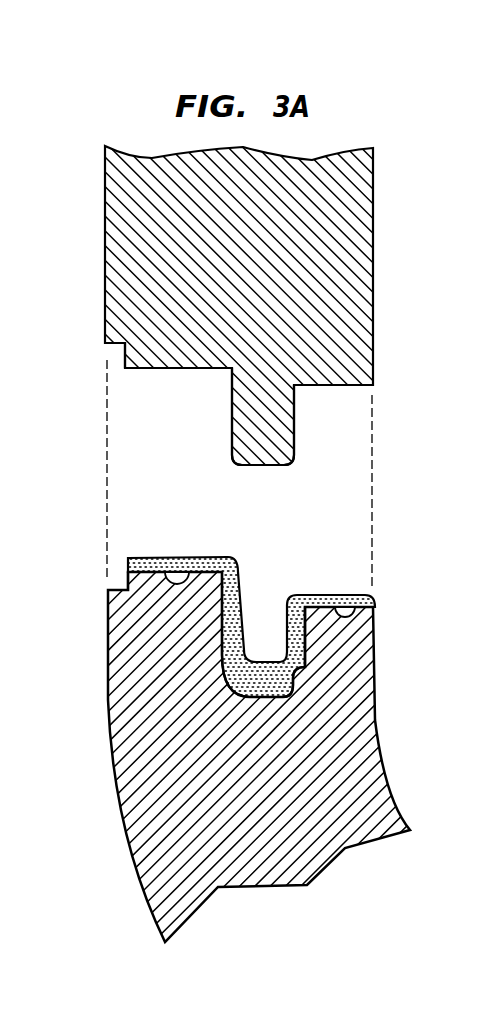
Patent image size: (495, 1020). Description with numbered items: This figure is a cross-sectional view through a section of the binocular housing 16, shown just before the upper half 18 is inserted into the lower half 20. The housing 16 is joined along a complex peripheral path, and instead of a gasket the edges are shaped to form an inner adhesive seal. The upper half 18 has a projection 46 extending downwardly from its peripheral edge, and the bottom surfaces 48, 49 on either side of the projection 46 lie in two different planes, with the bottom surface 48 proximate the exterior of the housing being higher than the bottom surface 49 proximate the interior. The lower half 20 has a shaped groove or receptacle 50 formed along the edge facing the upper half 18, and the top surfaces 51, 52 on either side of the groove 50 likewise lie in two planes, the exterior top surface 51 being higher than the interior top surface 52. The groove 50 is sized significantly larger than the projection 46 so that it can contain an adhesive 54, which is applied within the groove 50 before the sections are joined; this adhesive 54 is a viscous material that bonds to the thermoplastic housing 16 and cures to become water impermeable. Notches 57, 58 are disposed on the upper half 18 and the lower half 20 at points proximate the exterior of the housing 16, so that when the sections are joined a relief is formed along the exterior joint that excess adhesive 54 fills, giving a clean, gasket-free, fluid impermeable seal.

The binocular housing 16 is at (410, 259).
The upper half of the housing 18 is at (355, 302).
The lower half of the housing 20 is at (365, 760).
The projection 46 is at (265, 466).
The bottom surface 48 is at (165, 369).
The bottom surface 49 is at (323, 386).
The groove 50 is at (292, 670).
The top surface 51 is at (187, 570).
The top surface 52 is at (345, 605).
The adhesive 54 is at (296, 648).
The notch 57 is at (112, 357).
The notch 58 is at (118, 578).